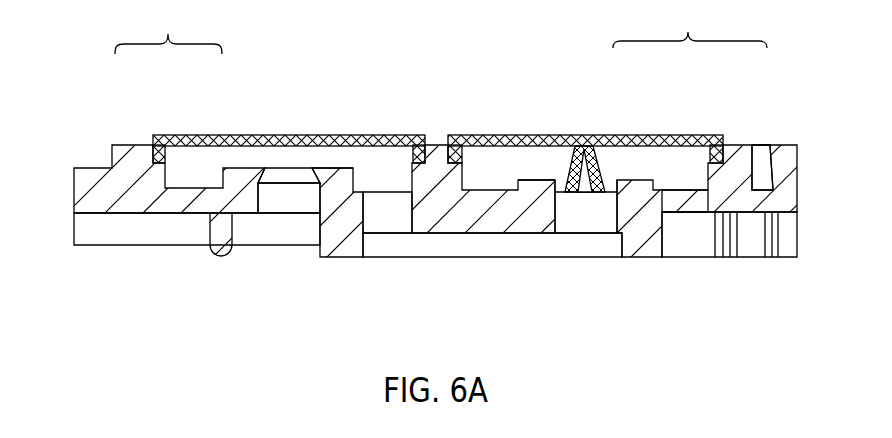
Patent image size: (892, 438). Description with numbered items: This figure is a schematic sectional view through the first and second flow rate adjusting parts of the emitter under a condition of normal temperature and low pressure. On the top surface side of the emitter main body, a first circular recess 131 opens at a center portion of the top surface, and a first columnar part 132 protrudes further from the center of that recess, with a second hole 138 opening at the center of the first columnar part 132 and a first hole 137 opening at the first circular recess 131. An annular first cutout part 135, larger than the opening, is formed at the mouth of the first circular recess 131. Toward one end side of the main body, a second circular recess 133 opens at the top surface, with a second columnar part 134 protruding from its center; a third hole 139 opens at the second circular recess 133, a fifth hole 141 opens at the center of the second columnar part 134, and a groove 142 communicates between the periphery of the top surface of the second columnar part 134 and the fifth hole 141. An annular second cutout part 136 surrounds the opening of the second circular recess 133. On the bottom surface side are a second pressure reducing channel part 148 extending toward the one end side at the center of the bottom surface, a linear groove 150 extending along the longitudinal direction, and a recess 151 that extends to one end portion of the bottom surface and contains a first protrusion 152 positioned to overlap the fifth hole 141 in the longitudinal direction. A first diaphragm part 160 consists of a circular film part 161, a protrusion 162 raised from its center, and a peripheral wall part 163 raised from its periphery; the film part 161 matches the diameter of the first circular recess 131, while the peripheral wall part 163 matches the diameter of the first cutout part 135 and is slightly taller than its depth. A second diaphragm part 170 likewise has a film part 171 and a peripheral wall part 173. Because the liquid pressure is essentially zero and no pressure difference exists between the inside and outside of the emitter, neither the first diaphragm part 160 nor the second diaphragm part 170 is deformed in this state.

The first circular recess 131 is at (487, 190).
The first columnar part 132 is at (542, 180).
The second circular recess 133 is at (380, 189).
The second columnar part 134 is at (328, 168).
The first cutout part 135 is at (455, 168).
The second cutout part 136 is at (154, 164).
The first hole 137 is at (683, 213).
The second hole 138 is at (583, 234).
The third hole 139 is at (390, 234).
The fifth hole 141 is at (284, 213).
The groove 142 is at (291, 168).
The second pressure reducing channel part 148 is at (747, 257).
The groove 150 is at (517, 257).
The recess 151 is at (110, 245).
The first protrusion 152 is at (217, 257).
The first diaphragm part 160 is at (690, 24).
The film part 161 is at (687, 137).
The protrusion 162 is at (605, 167).
The peripheral wall part 163 is at (728, 146).
The second diaphragm part 170 is at (168, 27).
The film part 171 is at (195, 137).
The peripheral wall part 173 is at (150, 137).